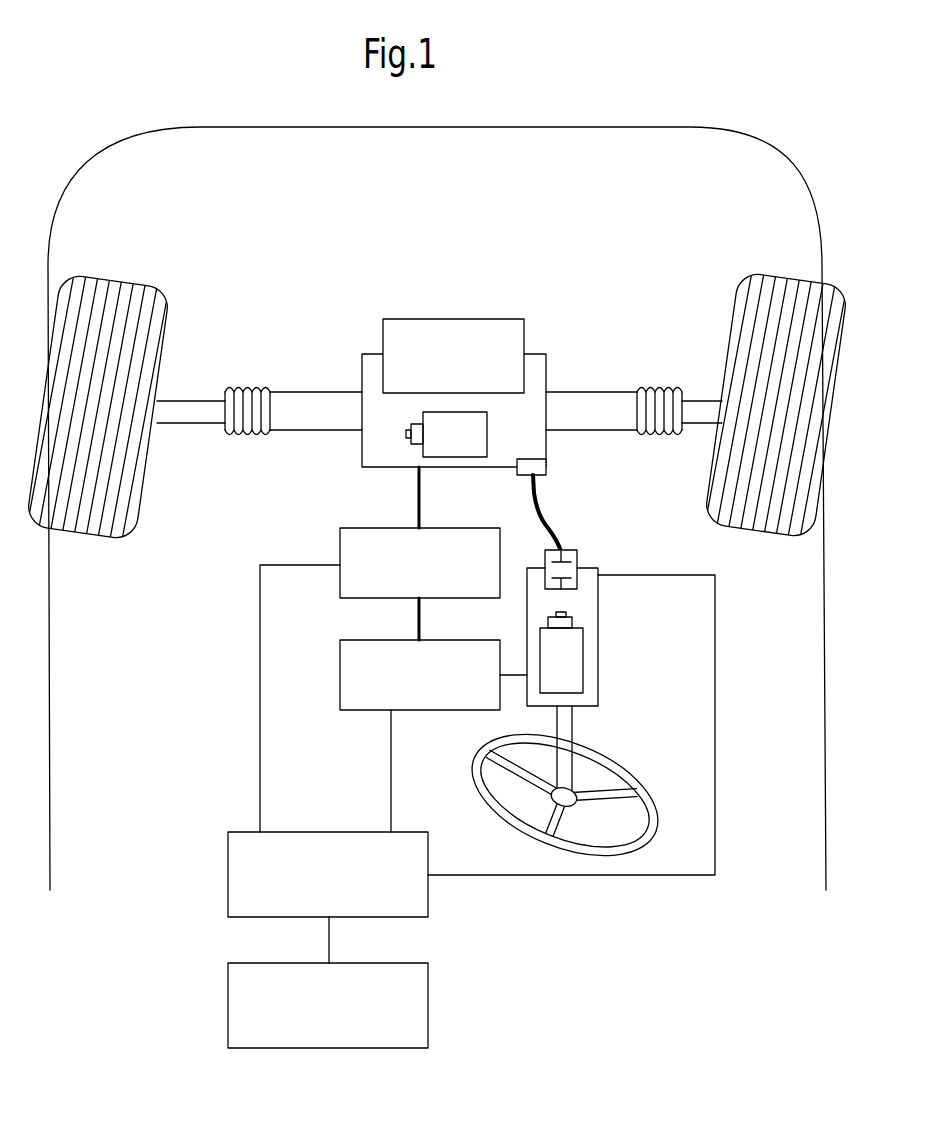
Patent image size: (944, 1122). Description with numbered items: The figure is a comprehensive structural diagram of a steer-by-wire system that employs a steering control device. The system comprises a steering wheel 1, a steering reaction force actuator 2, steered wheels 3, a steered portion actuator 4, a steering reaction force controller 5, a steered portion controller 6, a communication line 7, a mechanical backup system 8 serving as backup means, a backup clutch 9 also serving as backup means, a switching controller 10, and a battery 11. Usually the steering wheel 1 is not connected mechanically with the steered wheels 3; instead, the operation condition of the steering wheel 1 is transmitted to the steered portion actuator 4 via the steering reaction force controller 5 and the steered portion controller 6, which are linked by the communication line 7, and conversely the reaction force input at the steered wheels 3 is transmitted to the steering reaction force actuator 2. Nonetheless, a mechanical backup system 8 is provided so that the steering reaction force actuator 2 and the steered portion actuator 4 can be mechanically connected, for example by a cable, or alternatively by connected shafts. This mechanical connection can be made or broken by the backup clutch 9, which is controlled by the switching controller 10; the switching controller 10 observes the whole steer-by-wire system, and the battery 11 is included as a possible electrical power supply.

The steering wheel 1 is at (657, 817).
The steering reaction force actuator 2 is at (600, 663).
The steered wheels 3 is at (101, 276).
The steered portion actuator 4 is at (411, 319).
The steering reaction force controller 5 is at (340, 700).
The steered portion controller 6 is at (340, 537).
The communication line 7 is at (419, 622).
The mechanical backup system 8 is at (562, 532).
The backup clutch 9 is at (578, 562).
The switching controller 10 is at (228, 845).
The battery 11 is at (428, 984).